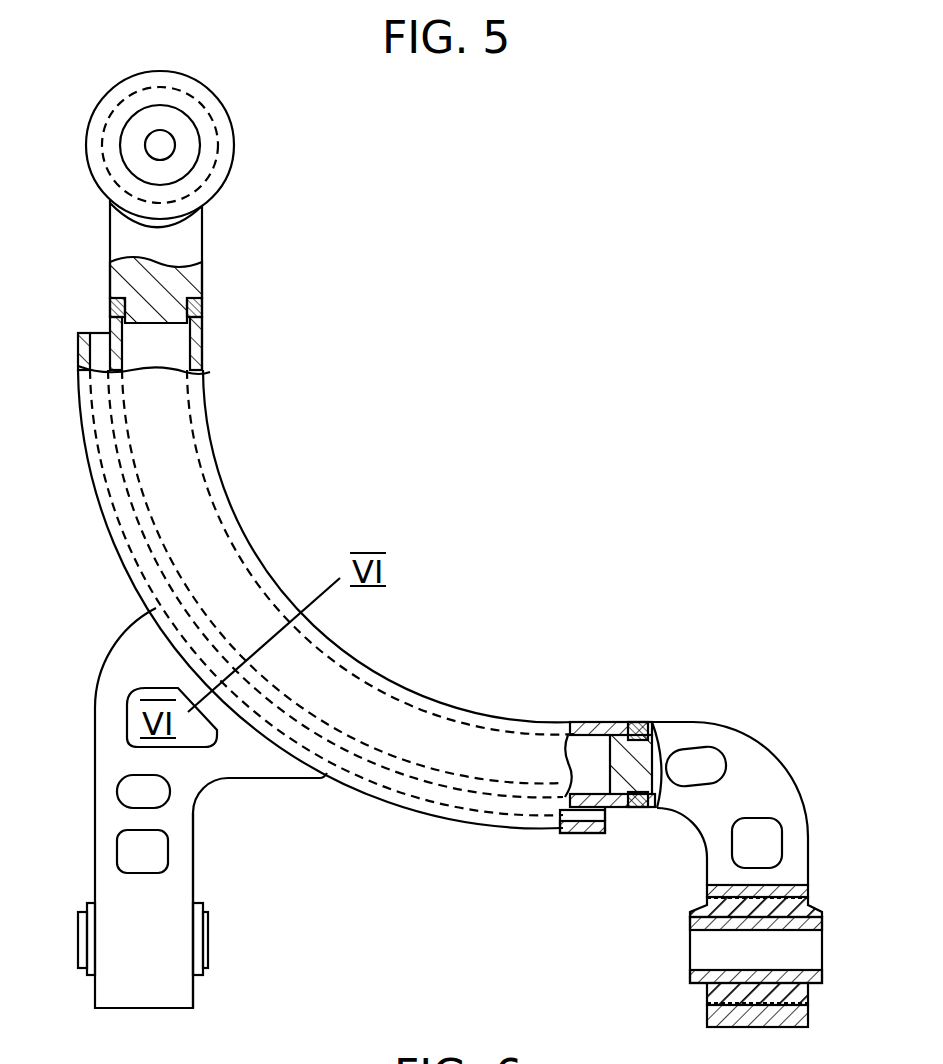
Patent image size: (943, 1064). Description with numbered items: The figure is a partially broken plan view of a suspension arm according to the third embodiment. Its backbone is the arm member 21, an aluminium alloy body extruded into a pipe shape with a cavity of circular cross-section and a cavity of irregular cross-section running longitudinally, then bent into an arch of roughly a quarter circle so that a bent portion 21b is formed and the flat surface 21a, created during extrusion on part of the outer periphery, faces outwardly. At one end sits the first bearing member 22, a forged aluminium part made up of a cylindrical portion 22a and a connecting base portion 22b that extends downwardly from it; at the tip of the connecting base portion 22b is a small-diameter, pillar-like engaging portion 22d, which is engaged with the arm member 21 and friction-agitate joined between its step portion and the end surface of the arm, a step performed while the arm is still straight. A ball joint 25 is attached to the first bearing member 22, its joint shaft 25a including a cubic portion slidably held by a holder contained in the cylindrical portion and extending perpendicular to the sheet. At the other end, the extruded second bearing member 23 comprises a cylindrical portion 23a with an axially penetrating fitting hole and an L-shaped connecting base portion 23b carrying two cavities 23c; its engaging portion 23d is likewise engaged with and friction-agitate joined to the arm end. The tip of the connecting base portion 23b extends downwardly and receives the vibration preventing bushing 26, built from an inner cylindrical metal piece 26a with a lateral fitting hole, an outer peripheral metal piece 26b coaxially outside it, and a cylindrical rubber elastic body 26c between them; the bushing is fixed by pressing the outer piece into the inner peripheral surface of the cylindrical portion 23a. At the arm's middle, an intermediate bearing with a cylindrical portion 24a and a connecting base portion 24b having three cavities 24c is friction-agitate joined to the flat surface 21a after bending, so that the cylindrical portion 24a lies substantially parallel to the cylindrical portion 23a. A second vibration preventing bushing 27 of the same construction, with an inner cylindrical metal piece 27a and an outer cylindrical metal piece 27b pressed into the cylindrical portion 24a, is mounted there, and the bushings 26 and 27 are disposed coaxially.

The arm member 21 is at (466, 685).
The flat surface 21a is at (410, 803).
The bent portion 21b is at (228, 552).
The first bearing member 22 is at (322, 200).
The cylindrical portion 22a is at (217, 187).
The connecting base portion 22b is at (175, 238).
The engaging portion 22d is at (150, 318).
The second bearing member 23 is at (698, 712).
The cylindrical portion 23a is at (717, 895).
The connecting base portion 23b is at (783, 798).
The cavities 23c is at (750, 833).
The engaging portion 23d is at (618, 762).
The cylindrical portion 24a is at (170, 920).
The connecting base portion 24b is at (183, 848).
The cavities 24c is at (190, 737).
The ball joint 25 is at (226, 97).
The joint shaft 25a is at (165, 142).
The vibration preventing bushing 26 is at (583, 910).
The inner cylindrical metal piece 26a is at (697, 968).
The outer peripheral metal piece 26b is at (700, 900).
The cylindrical rubber elastic body 26c is at (735, 915).
The vibration preventing bushing 27 is at (218, 927).
The inner cylindrical metal piece 27a is at (208, 942).
The outer cylindrical metal piece 27b is at (208, 962).